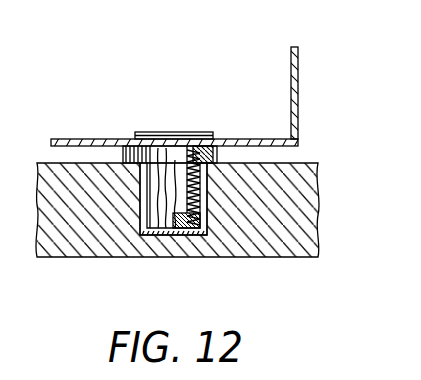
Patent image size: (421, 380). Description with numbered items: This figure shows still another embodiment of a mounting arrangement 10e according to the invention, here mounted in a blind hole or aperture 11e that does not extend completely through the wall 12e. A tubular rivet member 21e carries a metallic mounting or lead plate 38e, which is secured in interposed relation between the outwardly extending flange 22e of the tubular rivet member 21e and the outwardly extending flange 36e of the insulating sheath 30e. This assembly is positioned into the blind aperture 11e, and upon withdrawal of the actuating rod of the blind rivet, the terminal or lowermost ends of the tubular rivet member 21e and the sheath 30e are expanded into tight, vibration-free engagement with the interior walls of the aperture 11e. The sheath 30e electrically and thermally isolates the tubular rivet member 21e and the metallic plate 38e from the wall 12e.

The mounting arrangement 10e is at (184, 77).
The blind hole or aperture 11e is at (152, 182).
The wall 12e is at (300, 257).
The tubular rivet member 21e is at (175, 158).
The outwardly extending flange 22e is at (206, 140).
The insulating sheath 30e is at (203, 184).
The outwardly extending flange of the sheath 36e is at (204, 154).
The metallic mounting or lead plate 38e is at (300, 76).